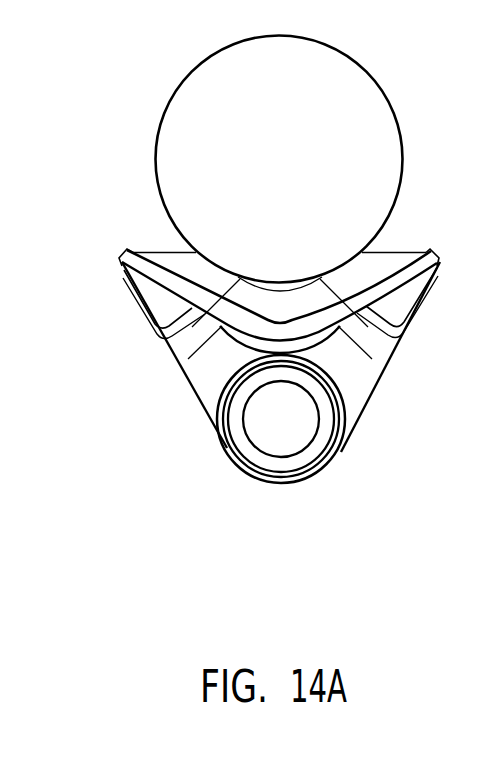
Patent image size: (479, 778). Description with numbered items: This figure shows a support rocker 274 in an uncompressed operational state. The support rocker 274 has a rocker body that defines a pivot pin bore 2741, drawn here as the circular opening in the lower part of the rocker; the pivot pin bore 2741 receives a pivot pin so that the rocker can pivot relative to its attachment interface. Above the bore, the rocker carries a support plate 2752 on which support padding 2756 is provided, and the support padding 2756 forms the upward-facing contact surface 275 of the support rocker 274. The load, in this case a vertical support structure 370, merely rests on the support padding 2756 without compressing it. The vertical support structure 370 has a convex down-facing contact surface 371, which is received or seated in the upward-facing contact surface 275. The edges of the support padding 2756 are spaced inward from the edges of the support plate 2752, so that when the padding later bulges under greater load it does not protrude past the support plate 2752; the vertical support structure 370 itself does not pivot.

The vertical support structure 370 is at (357, 83).
The down-facing contact surface 371 is at (279, 281).
The upward-facing contact surface 275 is at (174, 343).
The support plate 2752 is at (160, 280).
The support padding 2756 is at (347, 283).
The pivot pin bore 2741 is at (283, 449).
The support rocker 274 is at (392, 485).